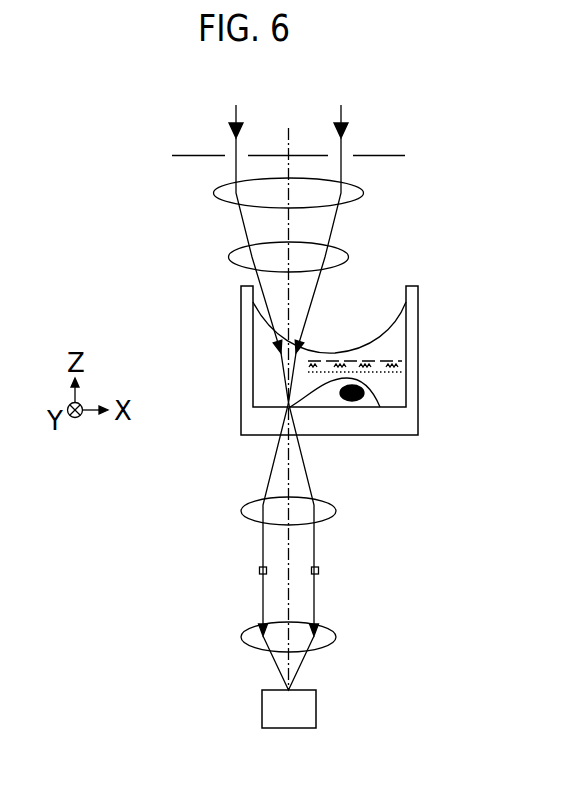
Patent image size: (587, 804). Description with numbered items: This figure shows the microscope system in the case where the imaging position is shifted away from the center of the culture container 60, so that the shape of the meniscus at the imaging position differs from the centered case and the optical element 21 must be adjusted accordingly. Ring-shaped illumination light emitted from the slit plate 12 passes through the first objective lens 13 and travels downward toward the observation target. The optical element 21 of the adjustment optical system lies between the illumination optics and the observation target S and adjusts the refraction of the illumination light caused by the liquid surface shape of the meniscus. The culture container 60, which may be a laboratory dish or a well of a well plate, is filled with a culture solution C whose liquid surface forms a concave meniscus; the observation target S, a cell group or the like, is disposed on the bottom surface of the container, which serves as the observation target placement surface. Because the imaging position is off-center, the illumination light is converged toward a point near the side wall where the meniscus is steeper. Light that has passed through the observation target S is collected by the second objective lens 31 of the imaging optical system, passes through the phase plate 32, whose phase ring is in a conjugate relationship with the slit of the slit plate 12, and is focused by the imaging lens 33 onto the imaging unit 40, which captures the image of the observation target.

The slit plate 12 is at (392, 153).
The first objective lens 13 is at (363, 193).
The optical element 21 is at (340, 247).
The culture container 60 is at (241, 331).
The culture solution C is at (397, 337).
The observation target S is at (367, 397).
The second objective lens 31 is at (241, 511).
The phase plate 32 is at (258, 571).
The imaging lens 33 is at (241, 637).
The imaging unit 40 is at (262, 712).